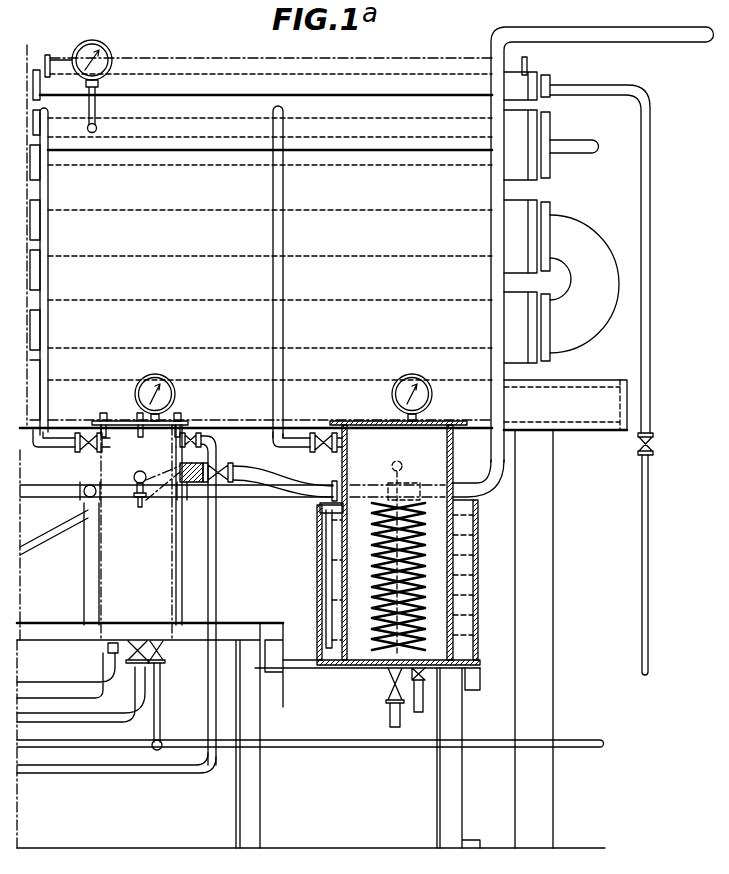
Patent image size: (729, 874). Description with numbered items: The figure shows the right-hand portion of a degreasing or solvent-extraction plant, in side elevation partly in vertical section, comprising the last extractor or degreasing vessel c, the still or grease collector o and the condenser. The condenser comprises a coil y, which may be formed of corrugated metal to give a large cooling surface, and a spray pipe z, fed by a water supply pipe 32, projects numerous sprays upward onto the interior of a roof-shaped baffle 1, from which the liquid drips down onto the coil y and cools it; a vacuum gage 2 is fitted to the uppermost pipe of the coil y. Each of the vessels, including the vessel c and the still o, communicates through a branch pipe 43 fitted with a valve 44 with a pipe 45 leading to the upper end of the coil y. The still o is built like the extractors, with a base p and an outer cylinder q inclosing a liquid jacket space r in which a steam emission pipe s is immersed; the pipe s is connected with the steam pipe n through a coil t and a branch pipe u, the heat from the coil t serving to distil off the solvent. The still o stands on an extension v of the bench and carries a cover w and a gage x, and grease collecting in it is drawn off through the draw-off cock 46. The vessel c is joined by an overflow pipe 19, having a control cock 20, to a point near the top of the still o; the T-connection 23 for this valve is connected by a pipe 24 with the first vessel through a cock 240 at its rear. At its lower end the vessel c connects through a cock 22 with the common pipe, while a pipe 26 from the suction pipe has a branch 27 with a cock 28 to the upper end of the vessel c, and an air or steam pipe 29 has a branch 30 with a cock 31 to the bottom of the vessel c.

The roof-shaped baffle 1 is at (186, 63).
The vacuum gage 2 is at (108, 50).
The overflow pipe 19 is at (290, 498).
The control cock 20 is at (220, 469).
The cock 22 is at (125, 650).
The T-connection 23 is at (184, 502).
The pipe 24 is at (63, 537).
The pipe 26 is at (98, 772).
The branch 27 is at (201, 600).
The cock 28 is at (201, 440).
The air or steam pipe 29 is at (341, 744).
The branch 30 is at (160, 700).
The cock 31 is at (165, 649).
The water supply pipe 32 is at (642, 543).
The branch pipe 43 is at (48, 275).
The valve 44 is at (187, 450).
The pipe 45 is at (175, 134).
The draw-off cock 46 is at (384, 697).
The cock 240 is at (168, 477).
The extractor or degreasing vessel c is at (150, 611).
The steam pipe n is at (367, 274).
The still or grease collector o is at (397, 542).
The base p is at (367, 679).
The outer cylinder q is at (330, 556).
The jacket space r is at (326, 535).
The steam emission pipe s is at (328, 575).
The coil t is at (386, 558).
The branch pipe u is at (417, 695).
The extension of the bench or framing v is at (311, 757).
The cover w is at (398, 411).
The gage x is at (432, 395).
The condenser coil y is at (333, 284).
The spray pipe z is at (266, 90).